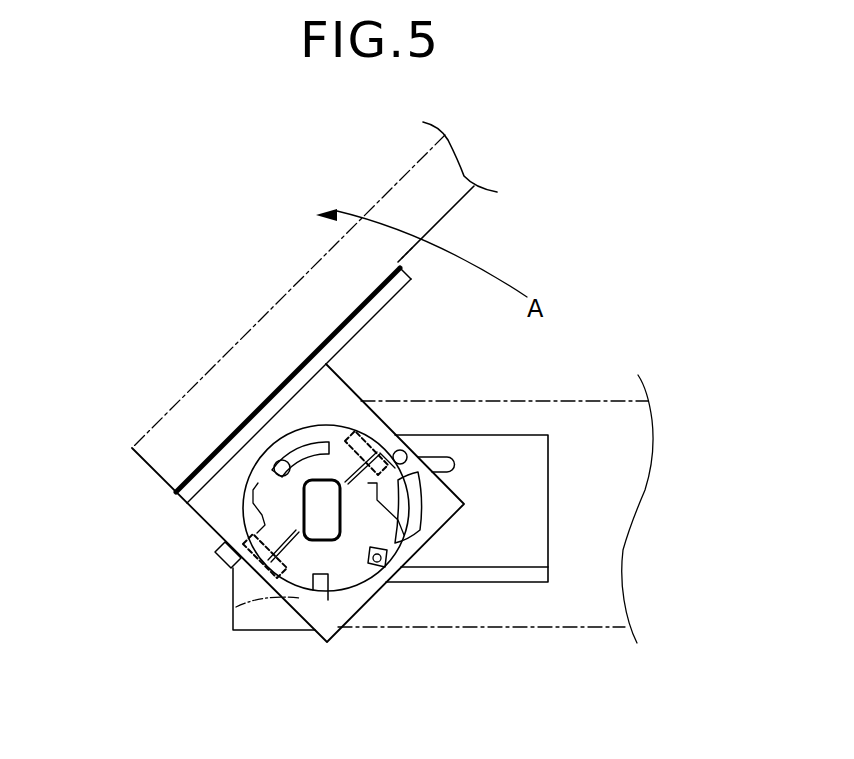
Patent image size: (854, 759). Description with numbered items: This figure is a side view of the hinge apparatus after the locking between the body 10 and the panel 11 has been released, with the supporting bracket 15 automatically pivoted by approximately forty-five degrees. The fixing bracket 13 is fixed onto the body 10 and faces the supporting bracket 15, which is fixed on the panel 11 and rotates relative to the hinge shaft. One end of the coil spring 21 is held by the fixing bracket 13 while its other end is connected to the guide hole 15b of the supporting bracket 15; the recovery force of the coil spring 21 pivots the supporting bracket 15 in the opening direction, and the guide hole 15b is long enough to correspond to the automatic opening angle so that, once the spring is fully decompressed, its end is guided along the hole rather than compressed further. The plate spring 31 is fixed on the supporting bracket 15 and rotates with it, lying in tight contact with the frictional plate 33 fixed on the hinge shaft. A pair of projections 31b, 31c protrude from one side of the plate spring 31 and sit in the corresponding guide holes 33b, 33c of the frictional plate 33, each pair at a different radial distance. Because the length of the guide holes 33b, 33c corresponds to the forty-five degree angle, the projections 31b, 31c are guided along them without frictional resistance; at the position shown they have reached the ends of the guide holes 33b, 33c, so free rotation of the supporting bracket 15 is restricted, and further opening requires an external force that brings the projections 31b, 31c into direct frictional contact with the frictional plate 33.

The body 10 is at (597, 607).
The panel 11 is at (392, 188).
The fixing bracket 13 is at (508, 577).
The supporting bracket 15 is at (157, 508).
The guide hole 15b is at (413, 525).
The coil spring 21 is at (453, 466).
The plate spring 31 is at (236, 606).
The projection 31b is at (373, 567).
The projection 31c is at (273, 465).
The frictional plate 33 is at (250, 477).
The guide hole 33b is at (338, 583).
The guide hole 33c is at (278, 468).